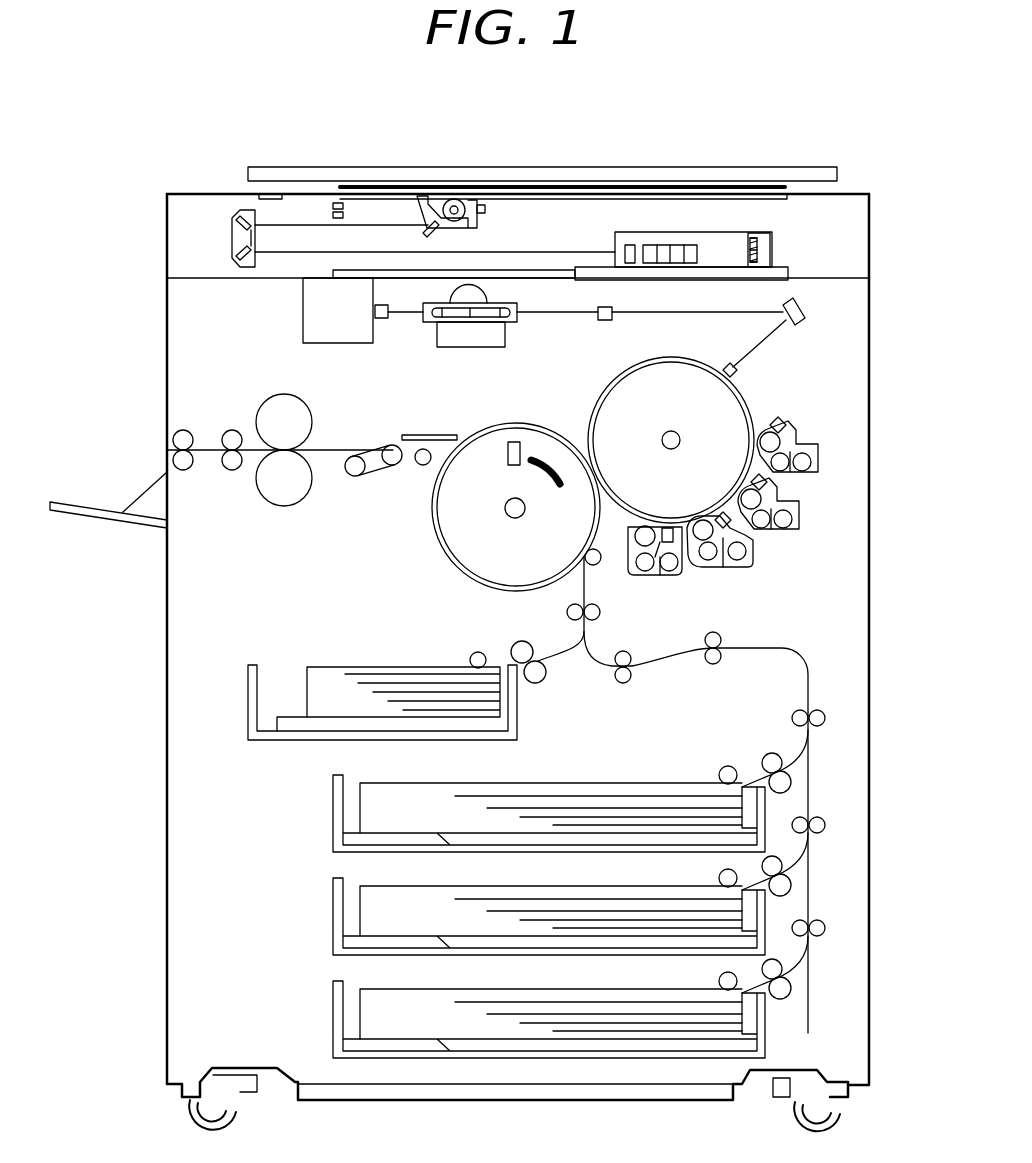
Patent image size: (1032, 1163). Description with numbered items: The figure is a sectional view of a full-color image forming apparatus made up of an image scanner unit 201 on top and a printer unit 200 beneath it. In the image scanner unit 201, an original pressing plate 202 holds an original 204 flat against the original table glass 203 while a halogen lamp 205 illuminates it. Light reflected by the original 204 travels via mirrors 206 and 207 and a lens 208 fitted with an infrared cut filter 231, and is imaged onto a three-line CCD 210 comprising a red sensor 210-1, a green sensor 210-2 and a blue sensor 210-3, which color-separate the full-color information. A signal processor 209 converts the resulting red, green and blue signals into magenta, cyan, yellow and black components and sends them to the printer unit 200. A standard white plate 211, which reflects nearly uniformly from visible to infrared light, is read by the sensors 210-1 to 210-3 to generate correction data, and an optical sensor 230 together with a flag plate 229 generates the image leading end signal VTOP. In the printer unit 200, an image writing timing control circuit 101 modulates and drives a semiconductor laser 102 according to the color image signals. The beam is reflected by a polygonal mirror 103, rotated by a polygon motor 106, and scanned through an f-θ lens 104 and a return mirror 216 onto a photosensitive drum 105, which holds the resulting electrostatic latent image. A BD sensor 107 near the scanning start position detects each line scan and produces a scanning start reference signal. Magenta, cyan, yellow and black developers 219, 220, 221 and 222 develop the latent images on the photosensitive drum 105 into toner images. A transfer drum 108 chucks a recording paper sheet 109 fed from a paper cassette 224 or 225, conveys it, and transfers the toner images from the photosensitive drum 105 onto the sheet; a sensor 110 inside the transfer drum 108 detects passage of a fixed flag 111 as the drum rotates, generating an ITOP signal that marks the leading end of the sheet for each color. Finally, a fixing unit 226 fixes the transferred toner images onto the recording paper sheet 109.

The image writing timing control circuit 101 is at (303, 310).
The semiconductor laser 102 is at (381, 318).
The polygonal mirror 103 is at (488, 322).
The f-θ lens 104 is at (600, 320).
The photosensitive drum 105 is at (592, 398).
The polygon motor 106 is at (455, 347).
The BD sensor 107 is at (727, 365).
The transfer drum 108 is at (432, 525).
The recording paper sheet 109 is at (335, 667).
The sensor 110 is at (508, 458).
The flag 111 is at (555, 485).
The printer unit 200 is at (869, 395).
The image scanner unit 201 is at (855, 194).
The original pressing plate 202 is at (362, 167).
The original table glass 203 is at (712, 198).
The original 204 is at (575, 186).
The halogen lamp 205 is at (455, 199).
The mirror 206 is at (425, 232).
The mirror 207 is at (236, 212).
The lens 208 is at (665, 245).
The signal processor 209 is at (788, 278).
The 3-line sensor (CCD) 210 is at (753, 233).
The red (R) sensor 210-1 is at (770, 238).
The green (G) sensor 210-2 is at (770, 250).
The blue (B) sensor 210-3 is at (770, 262).
The standard white plate 211 is at (270, 194).
The return mirror 216 is at (795, 325).
The magenta developer 219 is at (718, 567).
The cyan developer 220 is at (799, 515).
The yellow developer 221 is at (815, 444).
The black developer 222 is at (645, 575).
The paper cassette 224 is at (517, 728).
The paper cassette 225 is at (333, 787).
The fixing unit 226 is at (284, 506).
The flag plate 229 is at (482, 205).
The optical sensor 230 is at (337, 203).
The infrared cut filter 231 is at (625, 250).